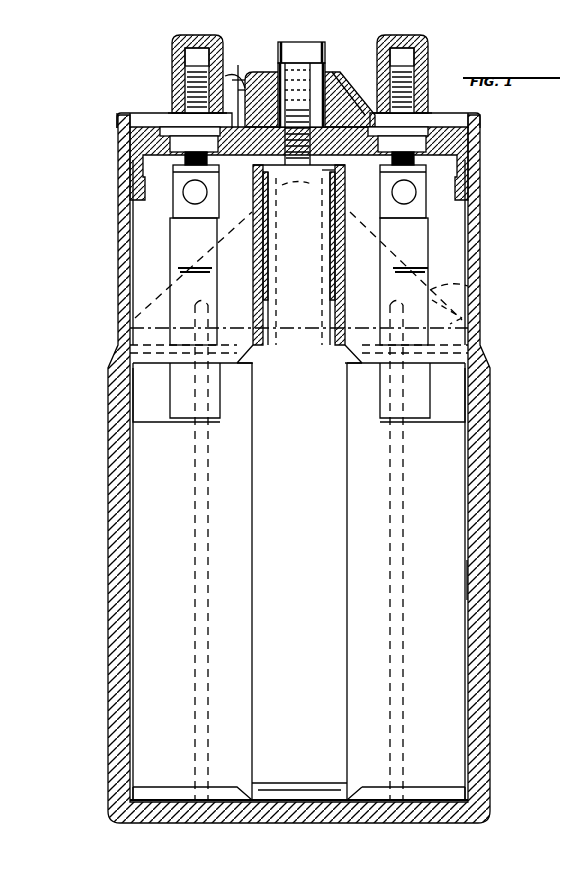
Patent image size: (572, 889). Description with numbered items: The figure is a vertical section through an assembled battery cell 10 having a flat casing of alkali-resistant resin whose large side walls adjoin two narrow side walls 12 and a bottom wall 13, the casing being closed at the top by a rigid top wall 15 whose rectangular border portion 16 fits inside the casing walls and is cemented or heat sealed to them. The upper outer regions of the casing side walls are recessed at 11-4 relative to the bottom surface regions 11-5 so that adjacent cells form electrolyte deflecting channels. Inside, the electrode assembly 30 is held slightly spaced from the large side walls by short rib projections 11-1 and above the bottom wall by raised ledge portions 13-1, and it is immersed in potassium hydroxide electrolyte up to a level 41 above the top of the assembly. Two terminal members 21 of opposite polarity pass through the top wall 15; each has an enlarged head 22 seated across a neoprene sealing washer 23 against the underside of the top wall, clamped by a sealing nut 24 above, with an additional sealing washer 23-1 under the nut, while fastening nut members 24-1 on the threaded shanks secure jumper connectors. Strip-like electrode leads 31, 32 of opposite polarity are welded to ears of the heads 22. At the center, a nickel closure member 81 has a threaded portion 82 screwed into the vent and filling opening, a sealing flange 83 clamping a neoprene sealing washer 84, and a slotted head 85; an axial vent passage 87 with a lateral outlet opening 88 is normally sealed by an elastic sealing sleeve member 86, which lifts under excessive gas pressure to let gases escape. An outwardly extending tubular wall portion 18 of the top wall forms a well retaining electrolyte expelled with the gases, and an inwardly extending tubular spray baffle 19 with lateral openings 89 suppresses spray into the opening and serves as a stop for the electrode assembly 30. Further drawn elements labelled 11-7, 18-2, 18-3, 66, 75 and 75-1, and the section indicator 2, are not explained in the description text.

The battery cell 10 is at (138, 92).
The rib projections 11-1 is at (195, 555).
The recessed upper surface regions 11-4 is at (140, 234).
The bottom surface regions 11-5 is at (488, 548).
The lead wire 11-7 is at (485, 283).
The narrow side walls 12 is at (108, 482).
The bottom wall 13 is at (172, 824).
The raised ledge portions 13-1 is at (175, 786).
The top wall 15 is at (241, 69).
The border portion 16 is at (488, 187).
The tubular wall portion 18 is at (262, 75).
The cover section 18-2 is at (327, 9).
The cover section 18-3 is at (255, 18).
The tubular spray baffle 19 is at (252, 256).
The section line 2- 2 is at (412, 32).
The terminal members 21 is at (192, 160).
The enlarged head 22 is at (132, 176).
The sealing washer 23 is at (132, 158).
The additional sealing washer 23-1 is at (158, 132).
The sealing nut 24 is at (172, 120).
The fastening nut members 24-1 is at (210, 24).
The electrode assembly 30 is at (455, 612).
The electrode leads 31 is at (165, 262).
The electrode leads 32 is at (440, 248).
The electrolyte level 41 is at (470, 320).
The lead 66 is at (178, 317).
The central tube lower part 75 is at (346, 520).
The tube flange 75-1 is at (345, 327).
The closure member 81 is at (298, 68).
The threaded portion 82 is at (336, 176).
The sealing flange 83 is at (245, 88).
The sealing washer 84 is at (348, 84).
The head 85 is at (293, 48).
The sealing sleeve member 86 is at (327, 75).
The vent passage 87 is at (298, 184).
The lateral outlet opening 88 is at (340, 62).
The lateral openings 89 is at (254, 180).